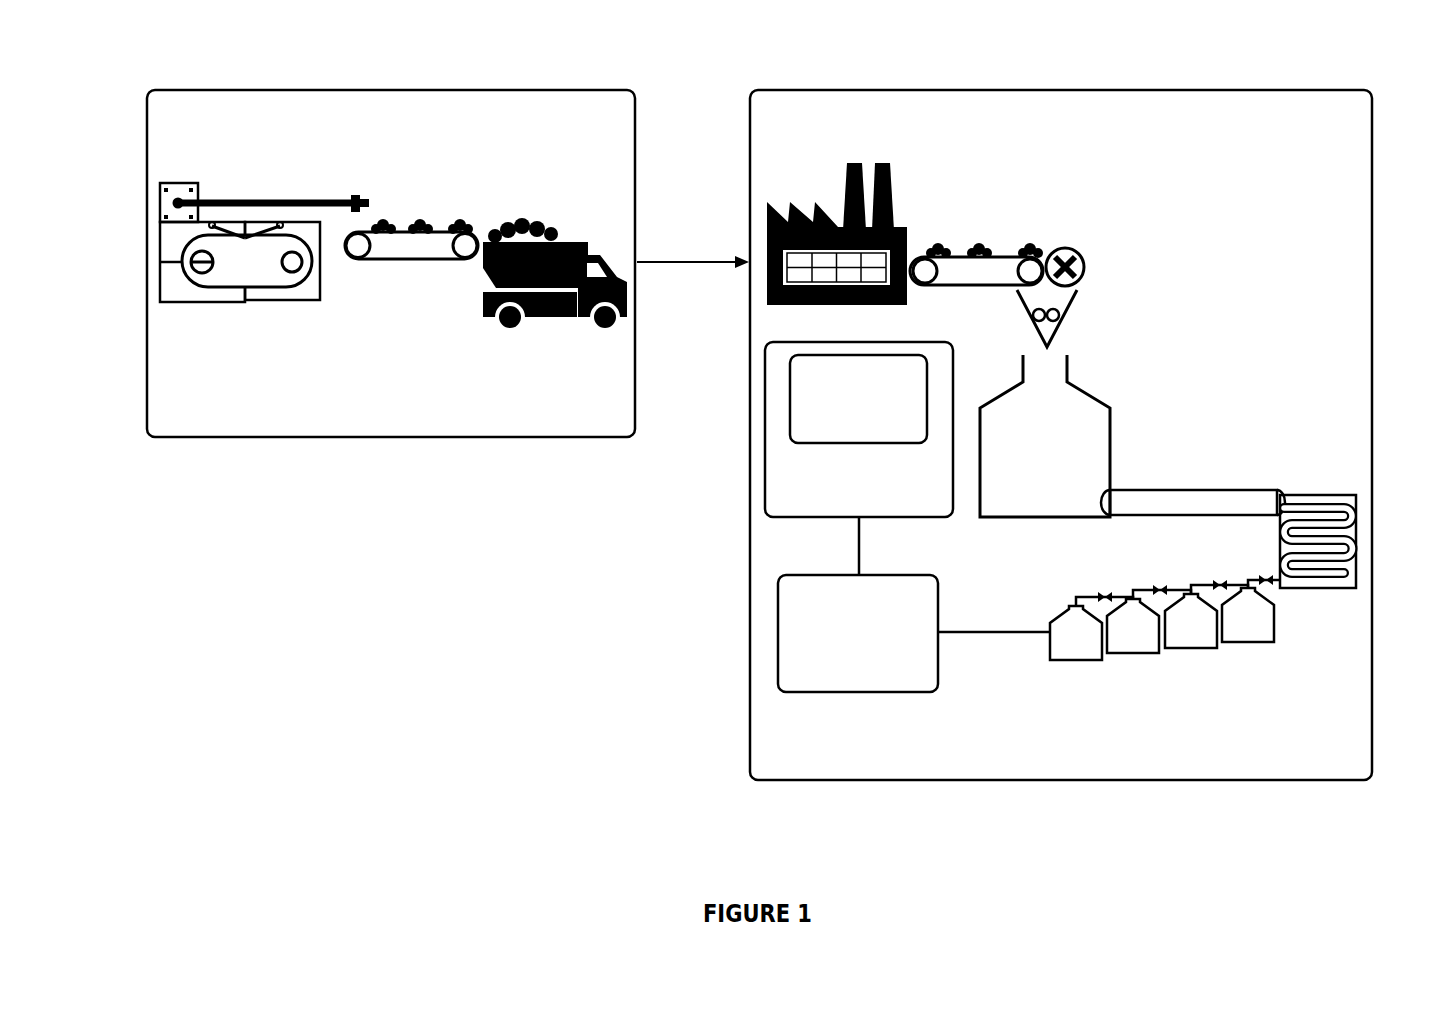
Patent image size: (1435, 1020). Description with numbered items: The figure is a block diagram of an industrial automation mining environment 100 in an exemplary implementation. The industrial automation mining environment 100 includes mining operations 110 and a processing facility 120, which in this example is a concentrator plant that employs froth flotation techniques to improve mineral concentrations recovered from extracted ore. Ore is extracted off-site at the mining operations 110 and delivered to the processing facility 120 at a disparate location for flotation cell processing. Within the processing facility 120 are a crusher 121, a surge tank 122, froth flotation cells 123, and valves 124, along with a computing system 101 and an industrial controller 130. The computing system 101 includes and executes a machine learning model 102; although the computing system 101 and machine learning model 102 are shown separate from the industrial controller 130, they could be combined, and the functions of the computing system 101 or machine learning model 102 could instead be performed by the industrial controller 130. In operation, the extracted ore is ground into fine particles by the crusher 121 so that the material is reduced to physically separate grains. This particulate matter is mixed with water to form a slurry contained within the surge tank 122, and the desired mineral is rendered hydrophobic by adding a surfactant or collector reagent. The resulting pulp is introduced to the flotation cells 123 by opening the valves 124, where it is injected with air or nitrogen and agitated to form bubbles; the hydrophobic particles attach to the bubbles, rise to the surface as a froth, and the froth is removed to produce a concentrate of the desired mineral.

The industrial automation mining environment 100 is at (1318, 17).
The mining operations 110 is at (513, 418).
The processing facility 120 is at (1192, 757).
The computing system 101 is at (917, 498).
The machine learning model 102 is at (913, 435).
The industrial controller 130 is at (875, 668).
The crusher 121 is at (1084, 267).
The surge tank 122 is at (1110, 415).
The froth flotation cells 123 is at (1275, 608).
The valves 124 is at (1267, 576).